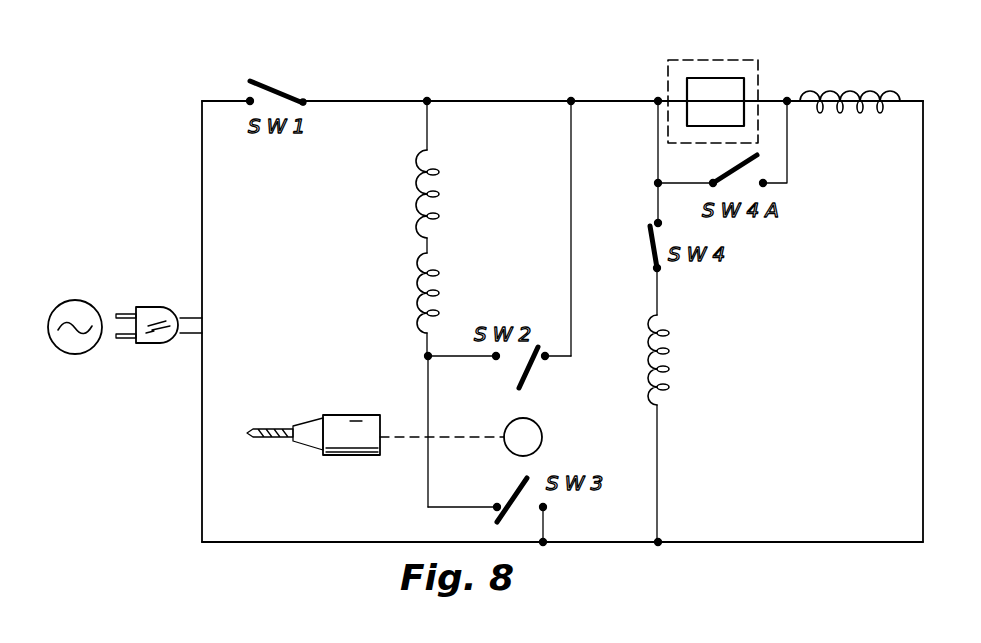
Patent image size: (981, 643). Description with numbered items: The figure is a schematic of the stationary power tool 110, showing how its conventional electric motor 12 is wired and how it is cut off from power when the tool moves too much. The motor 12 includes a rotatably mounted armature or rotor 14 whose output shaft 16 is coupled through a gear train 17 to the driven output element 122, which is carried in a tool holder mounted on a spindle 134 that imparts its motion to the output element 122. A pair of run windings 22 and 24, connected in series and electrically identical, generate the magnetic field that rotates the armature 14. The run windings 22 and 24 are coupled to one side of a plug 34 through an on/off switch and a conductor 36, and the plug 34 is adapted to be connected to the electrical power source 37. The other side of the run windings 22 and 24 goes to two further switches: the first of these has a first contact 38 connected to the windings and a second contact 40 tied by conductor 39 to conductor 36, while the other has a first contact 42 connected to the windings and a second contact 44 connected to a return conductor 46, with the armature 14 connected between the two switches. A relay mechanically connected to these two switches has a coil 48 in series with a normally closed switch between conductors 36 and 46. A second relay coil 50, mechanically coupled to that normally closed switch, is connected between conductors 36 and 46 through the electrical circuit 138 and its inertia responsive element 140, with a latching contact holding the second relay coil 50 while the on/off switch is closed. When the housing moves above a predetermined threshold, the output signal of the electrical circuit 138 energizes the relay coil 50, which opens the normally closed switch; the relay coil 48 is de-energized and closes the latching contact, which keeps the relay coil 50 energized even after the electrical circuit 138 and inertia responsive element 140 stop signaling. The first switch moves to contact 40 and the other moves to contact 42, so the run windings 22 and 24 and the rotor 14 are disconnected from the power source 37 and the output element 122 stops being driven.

The electric motor 12 is at (320, 240).
The armature 14 is at (541, 432).
The output shaft 16 is at (410, 441).
The gear train 17 is at (373, 415).
The run winding 22 is at (418, 300).
The run winding 24 is at (420, 174).
The plug 34 is at (156, 308).
The conductor 36 is at (609, 101).
The electrical power source 37 is at (84, 310).
The first contact 38 is at (497, 361).
The conductor 39 is at (571, 236).
The second contact 40 is at (547, 360).
The first contact 42 is at (499, 500).
The second contact 44 is at (553, 507).
The return conductor 46 is at (356, 542).
The relay coil 48 is at (670, 367).
The second relay coil 50 is at (870, 93).
The stationary power tool 110 is at (180, 394).
The output element 122 is at (270, 417).
The spindle 134 is at (312, 441).
The electrical circuit 138 is at (690, 60).
The inertia responsive element 140 is at (723, 86).